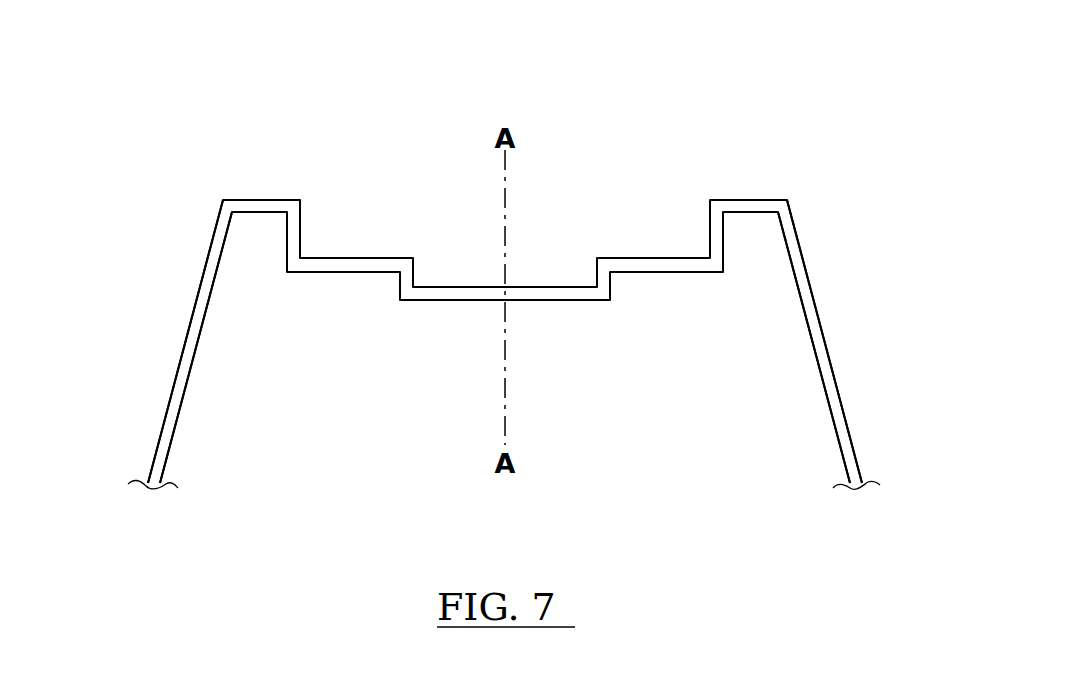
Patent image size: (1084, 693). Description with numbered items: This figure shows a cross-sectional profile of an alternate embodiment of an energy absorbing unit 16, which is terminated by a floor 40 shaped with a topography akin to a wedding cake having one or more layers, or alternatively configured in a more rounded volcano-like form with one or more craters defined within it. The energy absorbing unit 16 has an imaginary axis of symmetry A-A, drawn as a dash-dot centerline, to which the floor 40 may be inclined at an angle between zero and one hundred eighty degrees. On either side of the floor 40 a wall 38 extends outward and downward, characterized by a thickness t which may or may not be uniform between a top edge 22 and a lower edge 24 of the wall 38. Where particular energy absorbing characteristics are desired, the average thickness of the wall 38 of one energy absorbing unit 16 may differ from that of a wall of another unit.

The energy absorbing unit 16 is at (510, 287).
The top edge 22 is at (222, 198).
The lower edge 24 is at (168, 455).
The wall 38 is at (827, 332).
The floor 40 is at (302, 221).
The thickness t is at (253, 390).